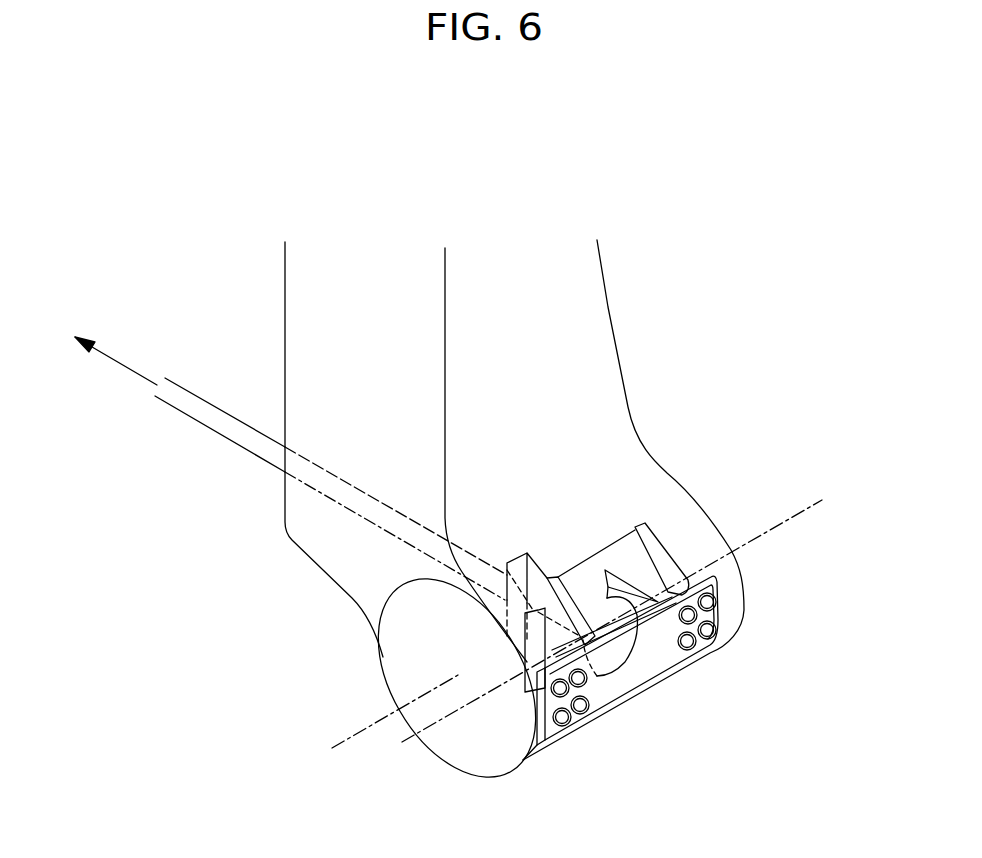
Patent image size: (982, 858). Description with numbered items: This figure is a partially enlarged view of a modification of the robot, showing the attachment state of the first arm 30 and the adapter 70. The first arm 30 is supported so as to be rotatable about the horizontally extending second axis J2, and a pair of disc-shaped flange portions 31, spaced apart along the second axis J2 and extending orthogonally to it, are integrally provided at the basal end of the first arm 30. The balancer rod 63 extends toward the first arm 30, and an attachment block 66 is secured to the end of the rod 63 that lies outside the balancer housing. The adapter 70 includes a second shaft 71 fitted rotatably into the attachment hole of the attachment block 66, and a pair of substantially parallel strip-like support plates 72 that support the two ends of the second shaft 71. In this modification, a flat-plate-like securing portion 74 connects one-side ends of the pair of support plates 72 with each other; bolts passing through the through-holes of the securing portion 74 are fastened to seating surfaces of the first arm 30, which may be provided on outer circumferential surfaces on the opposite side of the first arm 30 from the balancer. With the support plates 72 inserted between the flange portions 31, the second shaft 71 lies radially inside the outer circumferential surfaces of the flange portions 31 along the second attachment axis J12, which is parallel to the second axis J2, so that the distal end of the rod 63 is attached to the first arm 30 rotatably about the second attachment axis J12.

The first arm 30 is at (610, 307).
The flange portions 31 is at (385, 677).
The rod 63 is at (223, 387).
The attachment block 66 is at (583, 575).
The adapter 70 is at (632, 556).
The second shaft 71 is at (608, 568).
The support plates 72 is at (535, 645).
The securing portion 74 is at (607, 688).
The second axis J2 is at (342, 745).
The second attachment axis J12 is at (410, 745).